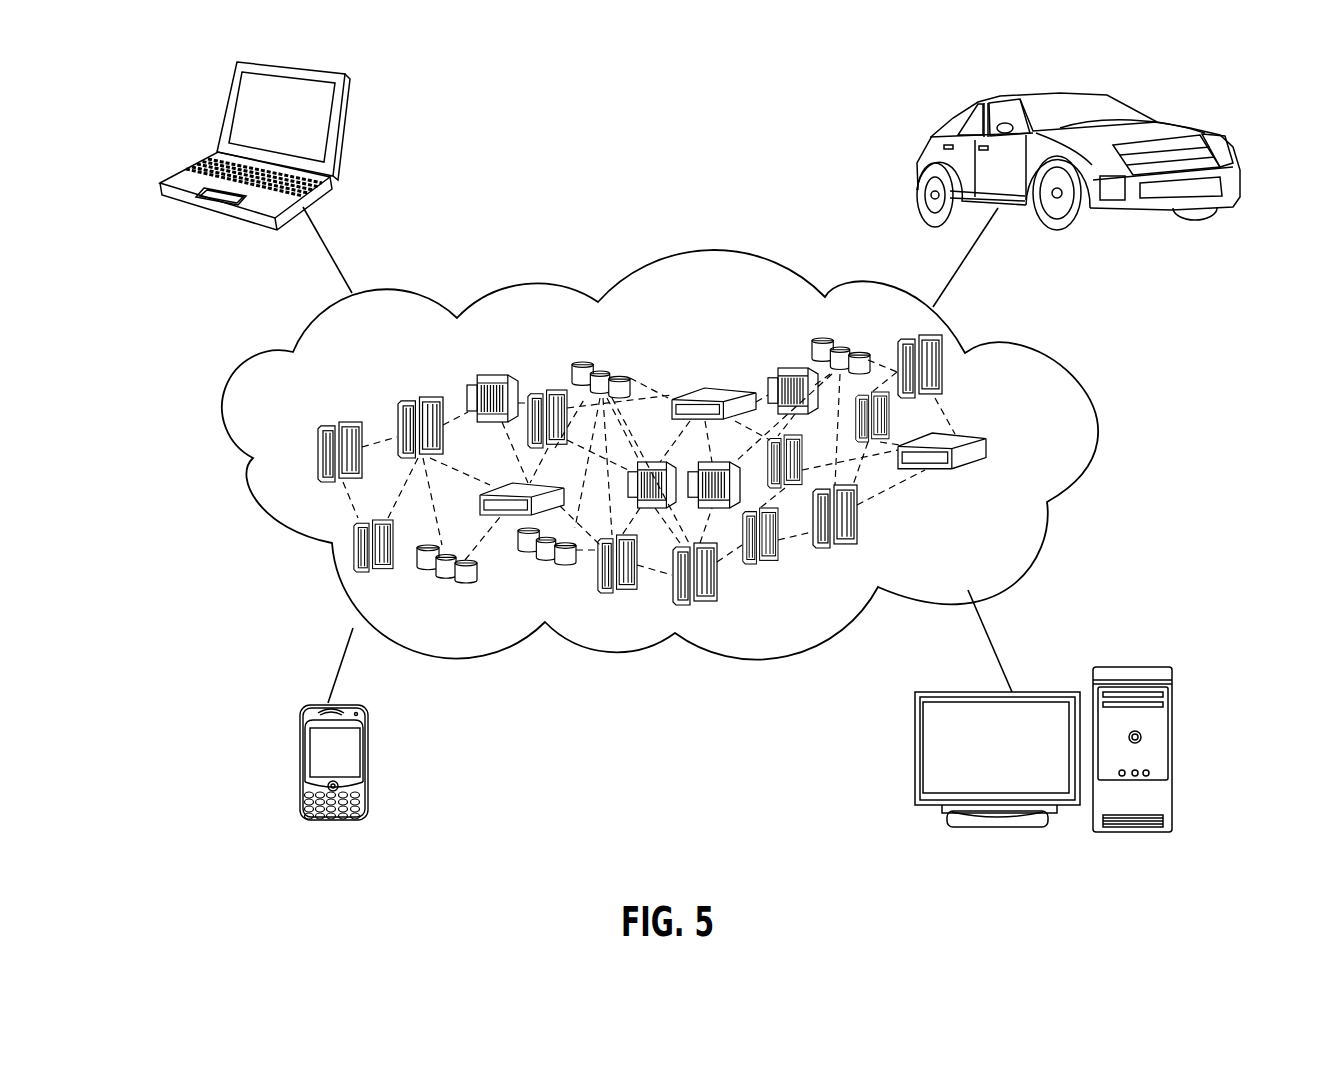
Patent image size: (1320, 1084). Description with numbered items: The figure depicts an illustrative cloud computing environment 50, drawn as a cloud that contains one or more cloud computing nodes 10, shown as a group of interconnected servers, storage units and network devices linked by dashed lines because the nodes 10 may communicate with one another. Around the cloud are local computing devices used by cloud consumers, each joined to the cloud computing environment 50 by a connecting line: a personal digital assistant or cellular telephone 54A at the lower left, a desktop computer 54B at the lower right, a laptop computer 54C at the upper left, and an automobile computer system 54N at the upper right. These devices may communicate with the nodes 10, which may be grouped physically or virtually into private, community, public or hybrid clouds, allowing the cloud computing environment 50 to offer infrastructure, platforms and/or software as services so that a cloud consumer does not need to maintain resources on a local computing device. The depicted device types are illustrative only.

The cloud computing node 10 is at (1044, 454).
The cloud computing environment 50 is at (1055, 365).
The personal digital assistant or cellular telephone 54A is at (300, 768).
The desktop computer 54B is at (1138, 665).
The laptop computer 54C is at (338, 130).
The automobile computer system 54N is at (925, 140).